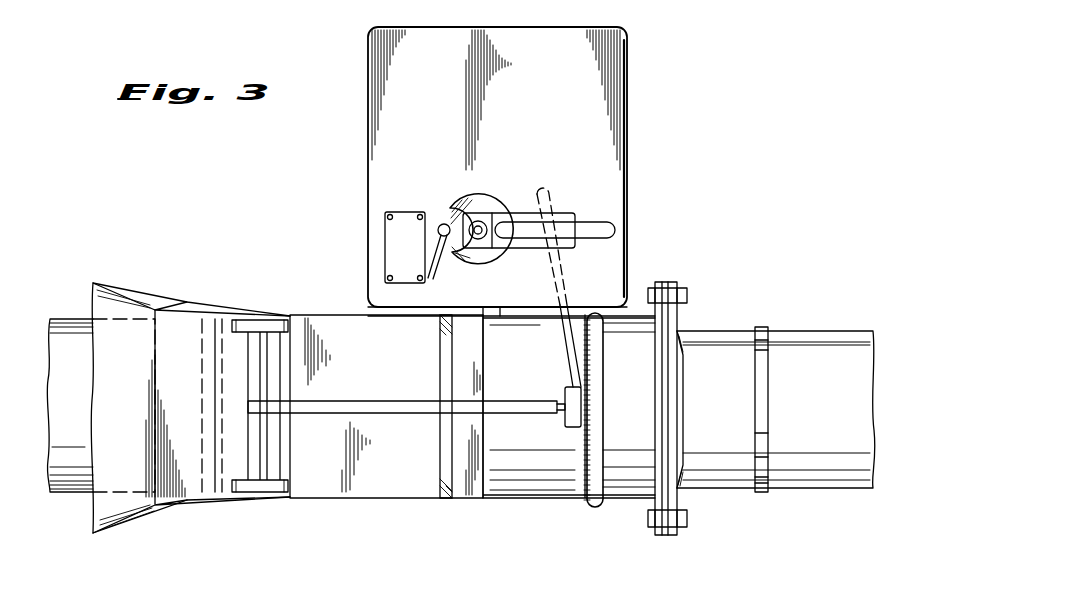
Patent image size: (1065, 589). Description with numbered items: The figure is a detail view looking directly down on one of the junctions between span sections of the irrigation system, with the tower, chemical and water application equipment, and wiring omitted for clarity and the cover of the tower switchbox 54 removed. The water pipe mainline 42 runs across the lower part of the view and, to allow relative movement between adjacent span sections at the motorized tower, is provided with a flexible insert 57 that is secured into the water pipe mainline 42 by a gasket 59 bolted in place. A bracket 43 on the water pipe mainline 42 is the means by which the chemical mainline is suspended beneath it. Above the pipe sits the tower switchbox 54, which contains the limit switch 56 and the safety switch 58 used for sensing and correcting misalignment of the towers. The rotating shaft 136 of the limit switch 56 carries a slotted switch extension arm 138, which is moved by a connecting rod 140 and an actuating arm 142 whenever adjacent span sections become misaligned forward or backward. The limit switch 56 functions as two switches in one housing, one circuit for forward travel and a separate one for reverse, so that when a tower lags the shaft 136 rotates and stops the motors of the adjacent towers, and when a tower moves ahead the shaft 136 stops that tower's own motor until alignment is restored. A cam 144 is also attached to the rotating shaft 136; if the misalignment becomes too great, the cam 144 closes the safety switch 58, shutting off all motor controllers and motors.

The tower switchbox 54 is at (627, 99).
The safety switch 58 is at (385, 249).
The cam 144 is at (488, 194).
The rotating shaft 136 is at (478, 250).
The limit switch 56 is at (532, 252).
The slotted switch extension arm 138 is at (617, 229).
The connecting rod 140 is at (562, 345).
The flexible insert 57 is at (513, 483).
The actuating arm 142 is at (340, 410).
The gasket 59 is at (670, 323).
The water pipe mainline 42 is at (732, 473).
The bracket 43 is at (765, 493).